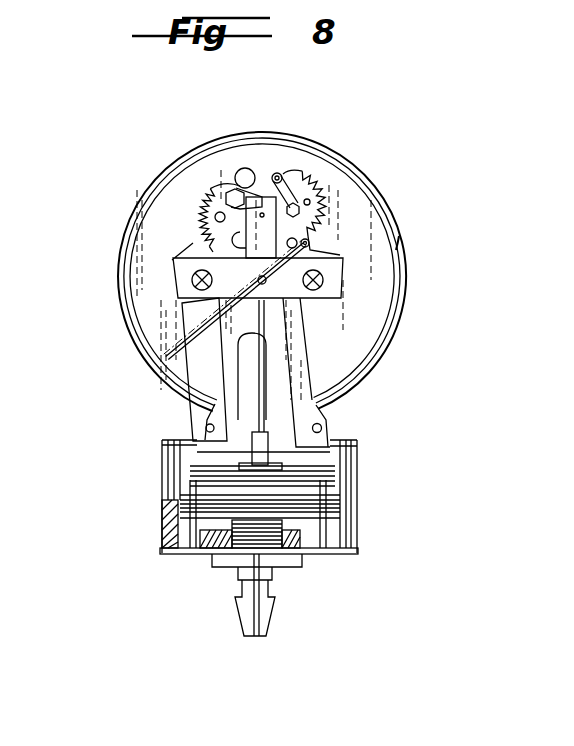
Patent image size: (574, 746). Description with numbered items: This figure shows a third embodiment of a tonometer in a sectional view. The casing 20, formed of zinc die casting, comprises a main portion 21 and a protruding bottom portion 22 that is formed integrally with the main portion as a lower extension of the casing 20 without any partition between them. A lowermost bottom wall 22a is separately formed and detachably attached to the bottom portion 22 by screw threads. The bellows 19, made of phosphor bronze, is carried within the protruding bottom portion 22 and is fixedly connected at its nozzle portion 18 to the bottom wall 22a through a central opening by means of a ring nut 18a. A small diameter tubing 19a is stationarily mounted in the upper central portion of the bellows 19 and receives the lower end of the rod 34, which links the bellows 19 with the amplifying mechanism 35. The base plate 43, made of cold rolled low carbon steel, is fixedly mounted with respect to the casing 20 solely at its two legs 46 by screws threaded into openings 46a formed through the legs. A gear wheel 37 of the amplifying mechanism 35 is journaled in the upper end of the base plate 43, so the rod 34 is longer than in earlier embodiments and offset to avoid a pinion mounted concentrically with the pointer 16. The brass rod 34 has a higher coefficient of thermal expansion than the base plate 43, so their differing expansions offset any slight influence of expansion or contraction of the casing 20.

The casing 20 is at (372, 183).
The casing main portion 21 is at (405, 234).
The base plate 43 is at (322, 320).
The gear wheel 37 is at (222, 182).
The amplifying mechanism 35 is at (263, 182).
The pointer 16 is at (168, 356).
The rod 34 is at (305, 372).
The legs 46 is at (192, 408).
The openings 46a is at (160, 441).
The small diameter tubing 19a is at (332, 440).
The bellows 19 is at (330, 470).
The protruding bottom portion 22 is at (358, 523).
The bottom wall 22a is at (358, 553).
The ring nut 18a is at (308, 566).
The nozzle portion 18 is at (275, 620).